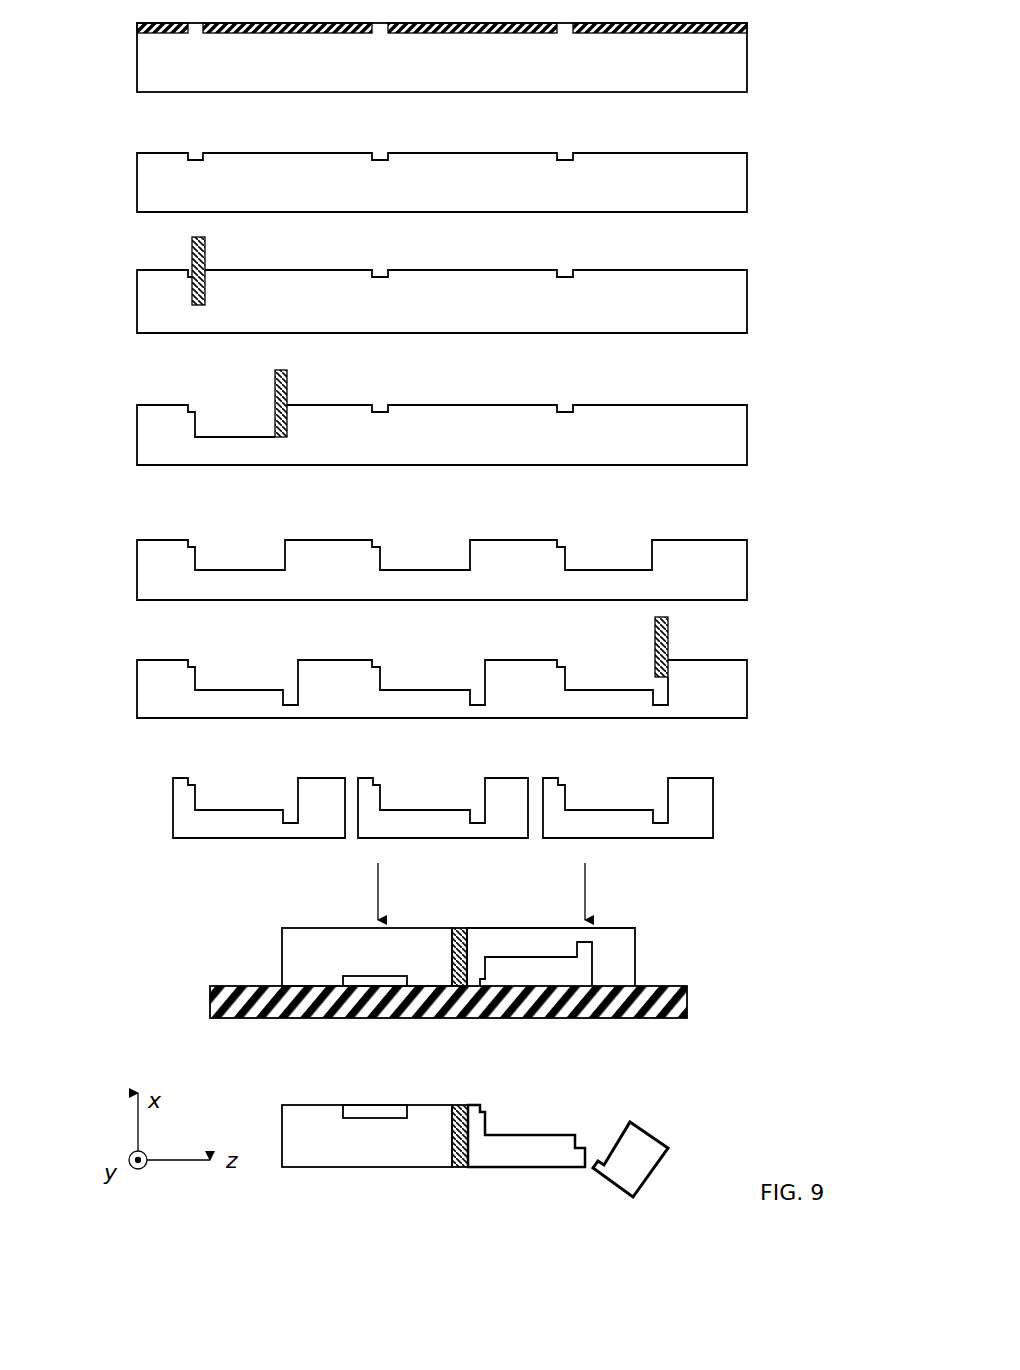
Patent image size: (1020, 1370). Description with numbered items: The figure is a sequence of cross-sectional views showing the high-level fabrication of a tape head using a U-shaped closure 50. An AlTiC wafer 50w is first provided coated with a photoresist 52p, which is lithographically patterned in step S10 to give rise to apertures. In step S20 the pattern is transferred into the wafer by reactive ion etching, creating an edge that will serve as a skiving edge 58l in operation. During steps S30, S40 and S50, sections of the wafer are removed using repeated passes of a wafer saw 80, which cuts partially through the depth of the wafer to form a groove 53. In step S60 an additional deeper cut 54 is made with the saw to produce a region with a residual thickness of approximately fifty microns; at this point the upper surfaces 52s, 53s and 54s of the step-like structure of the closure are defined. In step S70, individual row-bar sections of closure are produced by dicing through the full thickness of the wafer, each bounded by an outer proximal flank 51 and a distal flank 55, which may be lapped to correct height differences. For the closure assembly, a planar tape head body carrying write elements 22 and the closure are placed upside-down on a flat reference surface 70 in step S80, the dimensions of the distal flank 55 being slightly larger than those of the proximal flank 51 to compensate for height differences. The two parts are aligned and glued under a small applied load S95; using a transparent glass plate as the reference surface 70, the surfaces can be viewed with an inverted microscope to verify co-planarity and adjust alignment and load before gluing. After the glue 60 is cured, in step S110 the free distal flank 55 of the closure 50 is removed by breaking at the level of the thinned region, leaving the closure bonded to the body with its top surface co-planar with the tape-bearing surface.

The write elements 22 is at (372, 976).
The closure 50 is at (210, 830).
The AlTiC wafer 50w is at (574, 93).
The proximal flank 51 is at (173, 792).
The photoresist 52p is at (137, 27).
The upper surface 52s is at (190, 660).
The groove 53 is at (596, 592).
The upper surface 53s is at (606, 570).
The deeper cut 54 is at (291, 720).
The upper surface 54s is at (476, 690).
The distal flank 55 is at (697, 797).
The skiving edge 58l is at (190, 152).
The glue 60 is at (458, 928).
The reference surface 70 is at (212, 1012).
The wafer saw 80 is at (192, 244).
The lithographic patterning step S10 is at (465, 84).
The reactive ion etching step S20 is at (775, 175).
The first saw cut step S30 is at (770, 302).
The second saw cut step S40 is at (765, 443).
The third saw cut step S50 is at (770, 560).
The deeper cut step S60 is at (770, 690).
The dicing step S70 is at (467, 881).
The placement step S80 is at (526, 1041).
The applied load S95 is at (585, 878).
The flank removal step S110 is at (690, 1120).